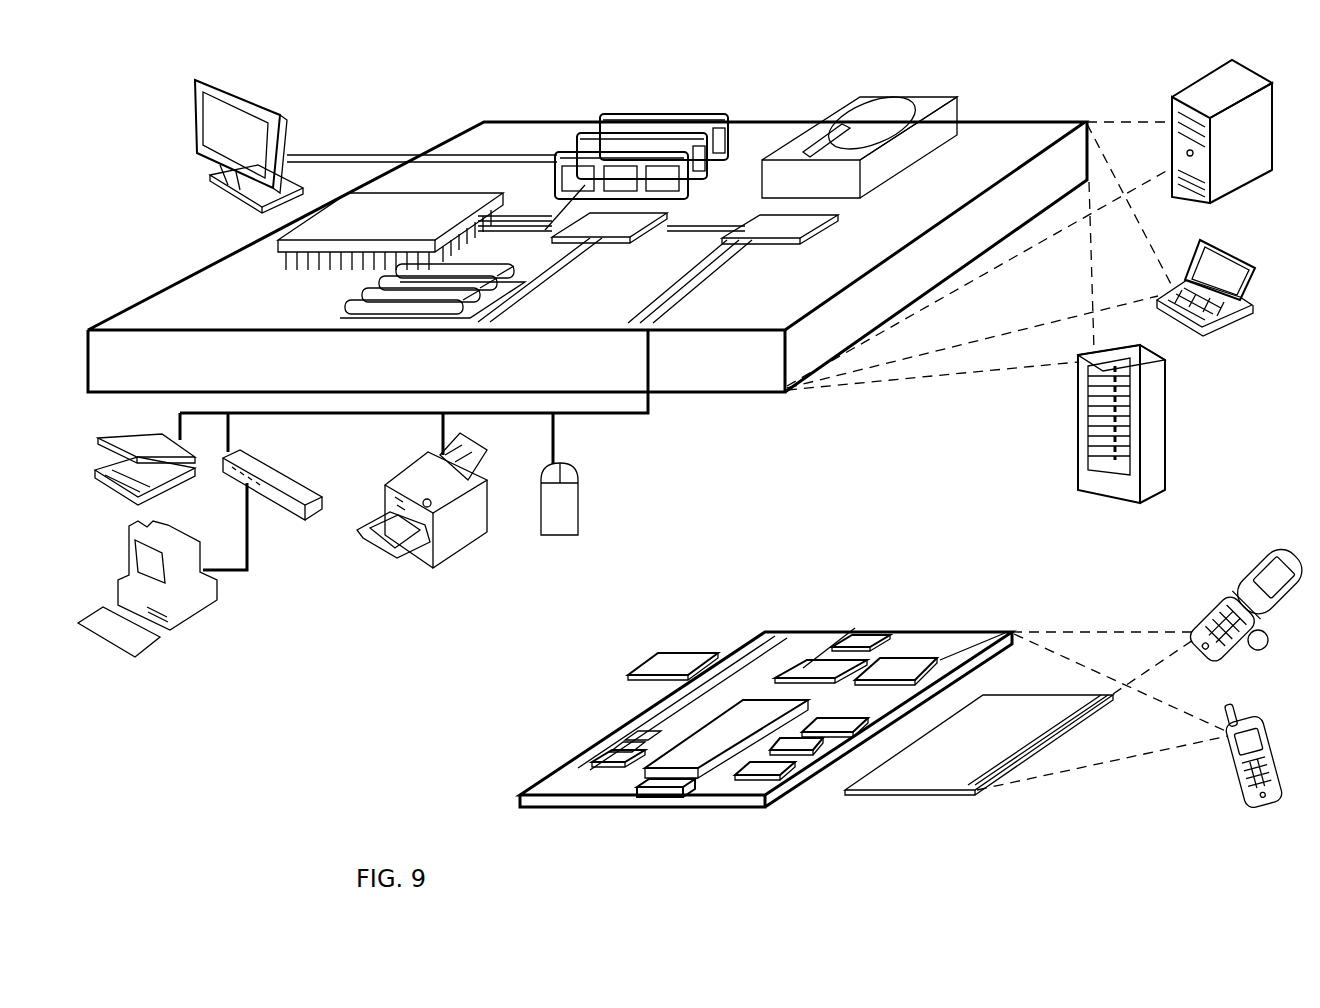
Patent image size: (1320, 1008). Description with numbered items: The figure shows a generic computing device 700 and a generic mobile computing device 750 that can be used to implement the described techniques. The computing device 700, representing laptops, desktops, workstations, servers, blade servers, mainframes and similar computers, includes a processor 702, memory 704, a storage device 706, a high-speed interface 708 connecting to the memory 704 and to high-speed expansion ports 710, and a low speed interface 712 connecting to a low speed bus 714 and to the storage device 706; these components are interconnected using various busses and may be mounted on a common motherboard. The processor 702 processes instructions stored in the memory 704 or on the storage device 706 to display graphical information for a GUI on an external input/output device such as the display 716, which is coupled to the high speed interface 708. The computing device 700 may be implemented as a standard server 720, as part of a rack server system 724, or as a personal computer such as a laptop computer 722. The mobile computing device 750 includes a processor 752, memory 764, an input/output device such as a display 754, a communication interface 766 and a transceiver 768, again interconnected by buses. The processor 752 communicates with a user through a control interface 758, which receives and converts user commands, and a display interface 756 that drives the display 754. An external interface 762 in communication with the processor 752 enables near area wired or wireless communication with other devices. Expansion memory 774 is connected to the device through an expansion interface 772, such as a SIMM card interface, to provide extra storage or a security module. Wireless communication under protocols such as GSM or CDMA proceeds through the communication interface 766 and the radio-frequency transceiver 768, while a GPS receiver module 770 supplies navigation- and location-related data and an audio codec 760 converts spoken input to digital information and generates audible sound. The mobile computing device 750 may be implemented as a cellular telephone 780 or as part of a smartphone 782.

The computing device 700 is at (402, 90).
The processor 702 is at (280, 244).
The memory 704 is at (612, 116).
The storage device 706 is at (846, 112).
The high-speed interface 708 is at (565, 218).
The high-speed expansion ports 710 is at (345, 305).
The low speed interface 712 is at (782, 232).
The low speed bus 714 is at (654, 332).
The display 716 is at (195, 82).
The standard server 720 is at (1170, 104).
The laptop computer 722 is at (1200, 244).
The rack server system 724 is at (1078, 452).
The mobile computing device 750 is at (740, 596).
The processor 752 is at (700, 778).
The display 754 is at (980, 792).
The display interface 756 is at (780, 792).
The control interface 758 is at (812, 758).
The audio codec 760 is at (830, 740).
The external interface 762 is at (660, 799).
The memory 764 is at (612, 760).
The communication interface 766 is at (816, 664).
The transceiver 768 is at (898, 666).
The GPS receiver module 770 is at (870, 662).
The expansion interface 772 is at (732, 658).
The expansion memory 774 is at (672, 658).
The cellular telephone 780 is at (1254, 566).
The smartphone 782 is at (1240, 710).